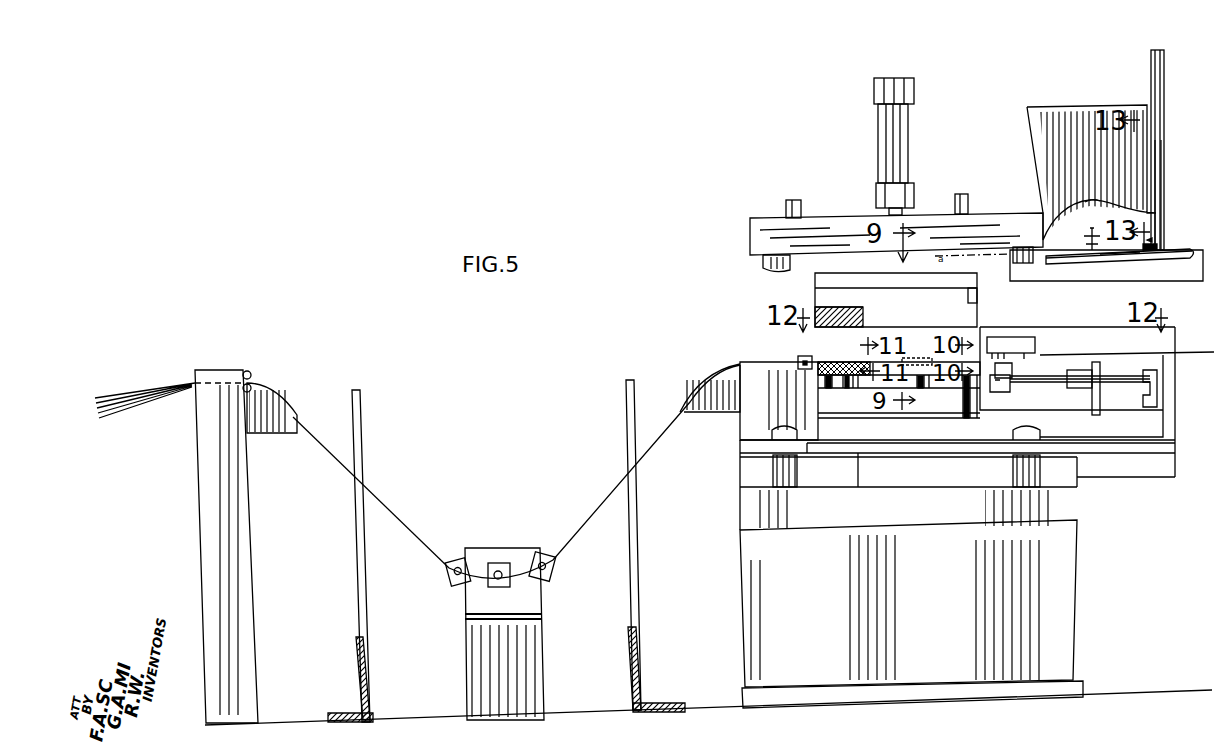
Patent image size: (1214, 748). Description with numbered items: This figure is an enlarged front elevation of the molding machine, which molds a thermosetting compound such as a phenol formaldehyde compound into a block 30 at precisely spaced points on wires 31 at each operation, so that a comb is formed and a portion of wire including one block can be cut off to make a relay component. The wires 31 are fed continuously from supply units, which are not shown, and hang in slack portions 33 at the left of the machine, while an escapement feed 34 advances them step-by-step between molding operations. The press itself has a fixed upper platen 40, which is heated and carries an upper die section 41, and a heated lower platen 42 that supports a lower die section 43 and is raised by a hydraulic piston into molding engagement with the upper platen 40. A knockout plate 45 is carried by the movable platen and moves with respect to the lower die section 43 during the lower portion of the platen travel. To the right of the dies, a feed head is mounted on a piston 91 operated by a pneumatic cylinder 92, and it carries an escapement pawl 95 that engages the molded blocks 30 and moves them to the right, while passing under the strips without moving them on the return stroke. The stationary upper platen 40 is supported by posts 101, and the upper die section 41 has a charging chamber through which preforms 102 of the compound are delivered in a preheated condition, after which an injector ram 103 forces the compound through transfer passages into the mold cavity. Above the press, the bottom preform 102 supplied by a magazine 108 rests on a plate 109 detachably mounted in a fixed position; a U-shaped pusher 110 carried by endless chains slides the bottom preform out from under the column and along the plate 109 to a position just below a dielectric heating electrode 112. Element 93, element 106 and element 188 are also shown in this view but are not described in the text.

The block 30 is at (917, 356).
The wires 31 is at (172, 390).
The slack portions 33 is at (540, 553).
The escapement feed 34 is at (1058, 361).
The fixed upper platen 40 is at (768, 225).
The upper die section 41 is at (963, 297).
The lower platen 42 is at (980, 405).
The lower die section 43 is at (928, 370).
The knockout plate 45 is at (937, 446).
The piston 91 is at (1034, 383).
The pneumatic cylinder 92 is at (1105, 388).
The bracket 93 is at (998, 391).
The escapement pawl 95 is at (1010, 370).
The posts 101 is at (801, 206).
The preforms 102 is at (1060, 265).
The injector ram 103 is at (898, 196).
The cylinder cap 106 is at (914, 90).
The magazine 108 is at (1164, 72).
The plate 109 is at (1162, 240).
The U-shaped pusher 110 is at (1110, 258).
The dielectric heating electrode 112 is at (1100, 198).
The pin 188 is at (1090, 252).